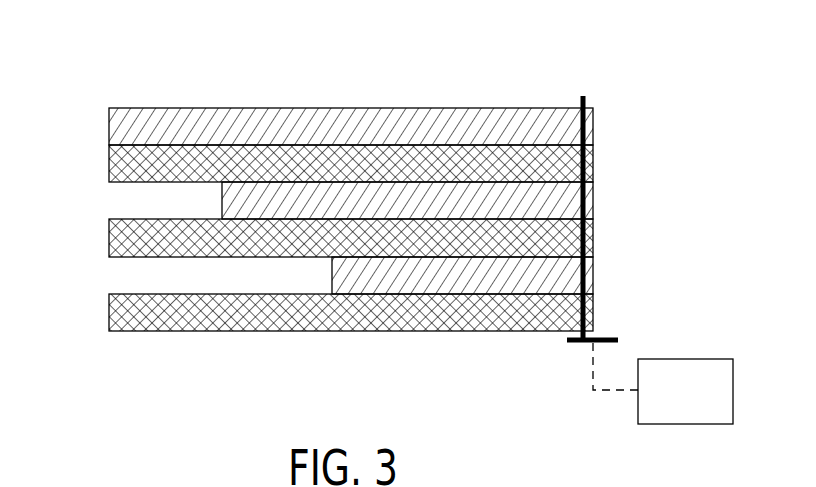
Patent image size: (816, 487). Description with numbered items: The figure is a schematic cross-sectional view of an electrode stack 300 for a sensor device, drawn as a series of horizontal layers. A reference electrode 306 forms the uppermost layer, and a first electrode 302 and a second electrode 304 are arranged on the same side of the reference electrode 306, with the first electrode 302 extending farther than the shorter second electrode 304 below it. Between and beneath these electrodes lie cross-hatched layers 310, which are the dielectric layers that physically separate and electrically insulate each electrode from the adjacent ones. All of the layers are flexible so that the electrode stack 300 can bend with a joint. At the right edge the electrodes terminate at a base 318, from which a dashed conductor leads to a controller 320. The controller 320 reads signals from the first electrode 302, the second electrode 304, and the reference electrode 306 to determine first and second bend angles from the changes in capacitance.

The electrode stack 300 is at (344, 44).
The reference electrode 306 is at (109, 125).
The insulating layer 310 is at (109, 160).
The first electrode 302 is at (222, 200).
The second electrode 304 is at (332, 273).
The base 318 is at (600, 336).
The controller 320 is at (702, 402).